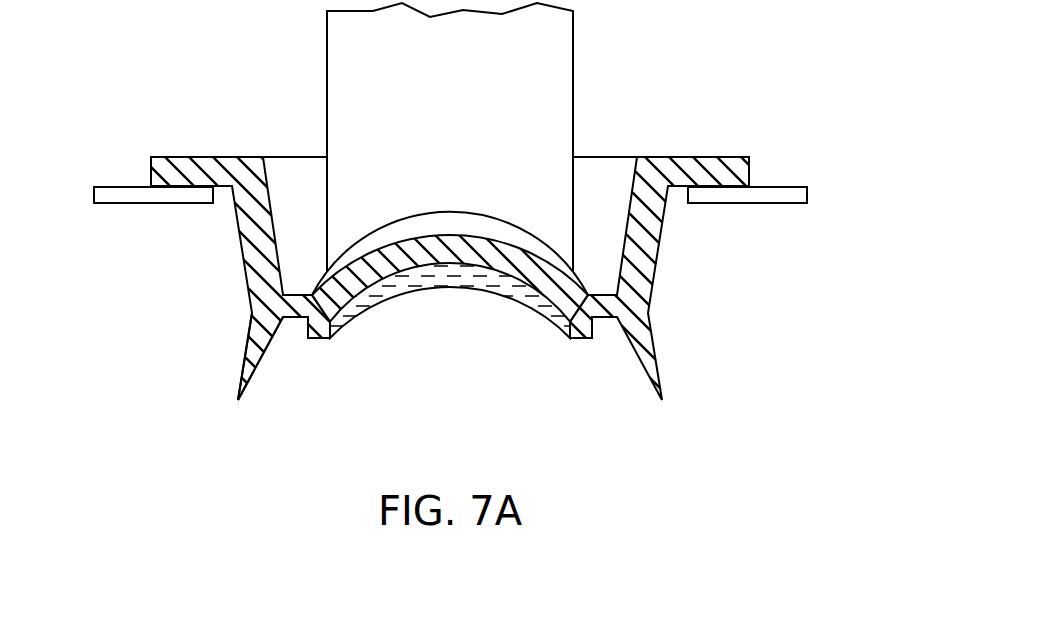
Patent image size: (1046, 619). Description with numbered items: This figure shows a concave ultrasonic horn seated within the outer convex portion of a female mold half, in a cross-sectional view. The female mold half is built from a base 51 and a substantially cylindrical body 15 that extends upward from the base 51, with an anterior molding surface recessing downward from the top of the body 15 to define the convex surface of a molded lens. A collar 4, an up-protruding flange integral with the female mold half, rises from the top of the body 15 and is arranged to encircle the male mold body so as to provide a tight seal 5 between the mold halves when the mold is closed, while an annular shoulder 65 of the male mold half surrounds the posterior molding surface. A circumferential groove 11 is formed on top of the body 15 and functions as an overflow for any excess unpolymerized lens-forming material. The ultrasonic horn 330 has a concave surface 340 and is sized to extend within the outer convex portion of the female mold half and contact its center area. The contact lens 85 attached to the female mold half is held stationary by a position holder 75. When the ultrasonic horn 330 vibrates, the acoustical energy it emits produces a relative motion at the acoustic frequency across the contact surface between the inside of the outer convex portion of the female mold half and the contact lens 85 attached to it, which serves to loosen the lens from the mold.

The ultrasonic horn 330 is at (573, 40).
The concave surface 340 is at (405, 220).
The base 51 is at (523, 215).
The position holder 75 is at (105, 193).
The body 15 is at (236, 231).
The circumferential groove 11 is at (297, 325).
The collar 4 is at (243, 357).
The seal 5 is at (607, 313).
The annular shoulder 65 is at (600, 318).
The contact lens 85 is at (498, 292).